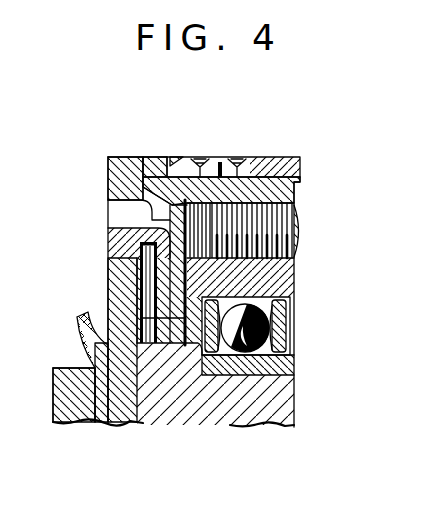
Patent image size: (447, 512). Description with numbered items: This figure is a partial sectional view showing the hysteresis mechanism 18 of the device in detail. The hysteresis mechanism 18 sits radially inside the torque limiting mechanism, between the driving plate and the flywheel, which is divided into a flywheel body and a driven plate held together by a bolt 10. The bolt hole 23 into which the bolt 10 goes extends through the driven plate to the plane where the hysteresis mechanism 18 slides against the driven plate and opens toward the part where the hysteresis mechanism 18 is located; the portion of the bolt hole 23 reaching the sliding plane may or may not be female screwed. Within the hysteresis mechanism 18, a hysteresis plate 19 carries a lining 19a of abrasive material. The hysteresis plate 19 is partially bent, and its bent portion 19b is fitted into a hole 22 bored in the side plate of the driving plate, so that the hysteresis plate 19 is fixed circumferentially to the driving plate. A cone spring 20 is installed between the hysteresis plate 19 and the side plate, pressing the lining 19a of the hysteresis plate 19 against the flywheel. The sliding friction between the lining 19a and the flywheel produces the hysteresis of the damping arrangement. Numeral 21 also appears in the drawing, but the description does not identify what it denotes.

The bolt 10 is at (283, 222).
The hysteresis mechanism 18 is at (338, 284).
The hysteresis plate 19 is at (175, 347).
The lining 19a is at (133, 265).
The bent portion 19b is at (112, 237).
The cone spring 20 is at (164, 320).
The spacer 21 is at (120, 270).
The hole 22 is at (112, 207).
The bolt hole 23 is at (190, 161).